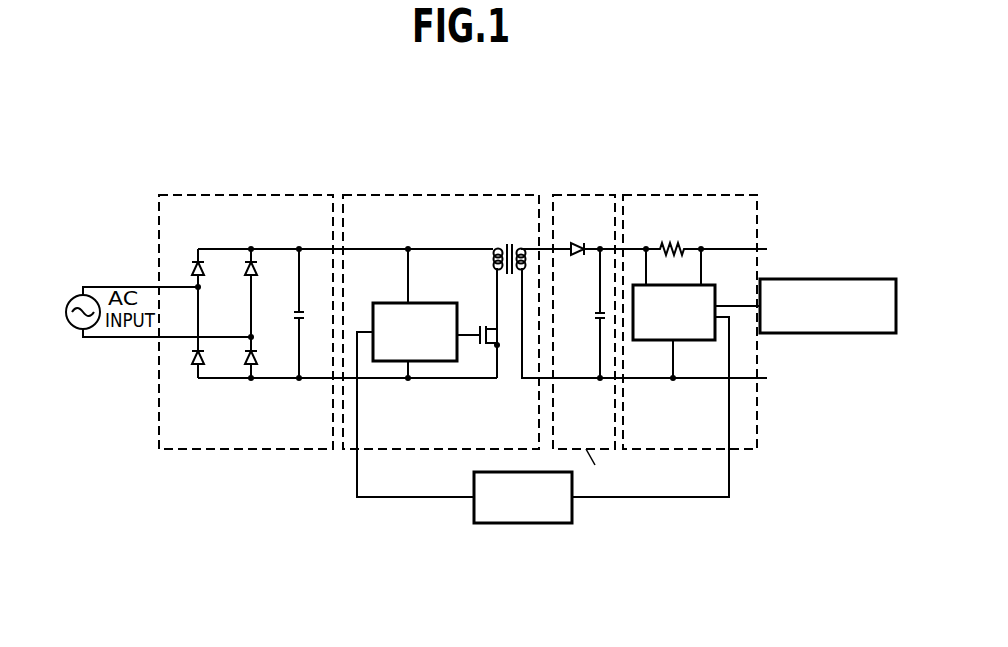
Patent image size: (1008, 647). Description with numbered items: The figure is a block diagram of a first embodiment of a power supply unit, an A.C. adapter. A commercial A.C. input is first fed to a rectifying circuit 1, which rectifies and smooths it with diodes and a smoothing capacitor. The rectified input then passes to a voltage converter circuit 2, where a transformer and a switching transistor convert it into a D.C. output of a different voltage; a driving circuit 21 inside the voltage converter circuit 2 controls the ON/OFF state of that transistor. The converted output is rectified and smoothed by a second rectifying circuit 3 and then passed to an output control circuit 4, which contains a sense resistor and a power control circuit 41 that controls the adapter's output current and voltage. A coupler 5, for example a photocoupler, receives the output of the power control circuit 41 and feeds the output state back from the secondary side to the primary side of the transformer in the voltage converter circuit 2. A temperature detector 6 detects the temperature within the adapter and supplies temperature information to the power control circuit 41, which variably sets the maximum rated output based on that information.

The rectifying circuit 1 is at (253, 195).
The voltage converter circuit 2 is at (440, 195).
The rectifying circuit 3 is at (582, 195).
The output control circuit 4 is at (692, 195).
The coupler 5 is at (573, 511).
The temperature detector 6 is at (808, 279).
The driving circuit 21 is at (441, 290).
The power control circuit 41 is at (728, 284).